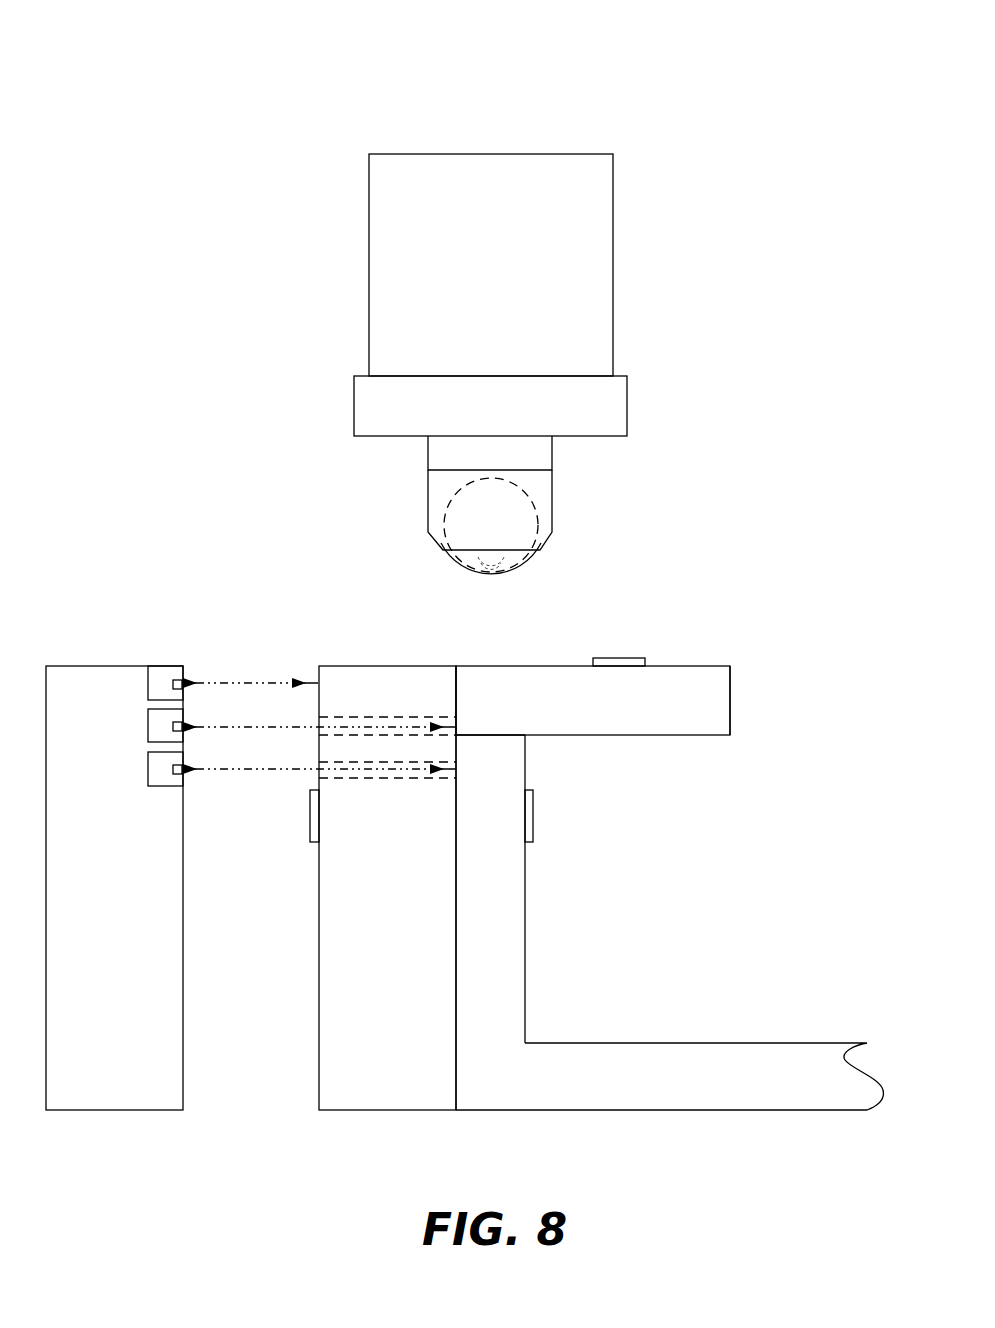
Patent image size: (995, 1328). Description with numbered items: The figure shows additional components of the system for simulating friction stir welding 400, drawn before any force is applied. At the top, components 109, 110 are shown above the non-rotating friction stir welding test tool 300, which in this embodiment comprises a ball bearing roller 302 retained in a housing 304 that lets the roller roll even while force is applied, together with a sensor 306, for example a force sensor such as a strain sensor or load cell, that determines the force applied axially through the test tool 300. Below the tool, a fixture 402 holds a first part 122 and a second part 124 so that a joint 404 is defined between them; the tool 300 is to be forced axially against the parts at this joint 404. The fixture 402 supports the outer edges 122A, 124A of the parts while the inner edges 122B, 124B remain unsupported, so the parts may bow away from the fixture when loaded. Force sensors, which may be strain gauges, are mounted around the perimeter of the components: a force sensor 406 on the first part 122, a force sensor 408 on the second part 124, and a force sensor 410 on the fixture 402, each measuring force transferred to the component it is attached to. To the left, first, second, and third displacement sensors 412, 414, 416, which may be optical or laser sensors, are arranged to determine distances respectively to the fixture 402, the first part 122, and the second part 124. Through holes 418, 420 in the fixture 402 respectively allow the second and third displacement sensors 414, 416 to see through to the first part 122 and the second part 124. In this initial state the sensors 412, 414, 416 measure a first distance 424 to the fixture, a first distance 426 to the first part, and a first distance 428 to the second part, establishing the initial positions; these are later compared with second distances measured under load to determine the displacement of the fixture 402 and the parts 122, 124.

The system for simulating friction stir welding 400 is at (126, 62).
The fluid reservoir 109 is at (369, 248).
The dispenser body 110 is at (354, 400).
The sensor 306 is at (428, 464).
The housing 304 is at (428, 503).
The ball bearing roller 302 is at (478, 572).
The non-rotating friction stir welding test tool 300 is at (598, 535).
The fixture 402 is at (340, 666).
The joint 404 is at (490, 735).
The force sensor 408 is at (622, 658).
The second part 124 is at (670, 677).
The outer edge of second part 124A is at (457, 692).
The inner edge of second part 124B is at (730, 702).
The first distance 424 is at (257, 683).
The first displacement sensor 412 is at (147, 685).
The third displacement sensor 416 is at (147, 727).
The second displacement sensor 414 is at (147, 770).
The first distance 428 is at (290, 727).
The first distance 426 is at (290, 769).
The through hole 420 is at (425, 717).
The through hole 418 is at (420, 778).
The force sensor 410 is at (310, 828).
The force sensor 406 is at (533, 818).
The outer edge of first part 122A is at (456, 907).
The inner edge of first part 122B is at (525, 907).
The first part 122 is at (490, 1025).